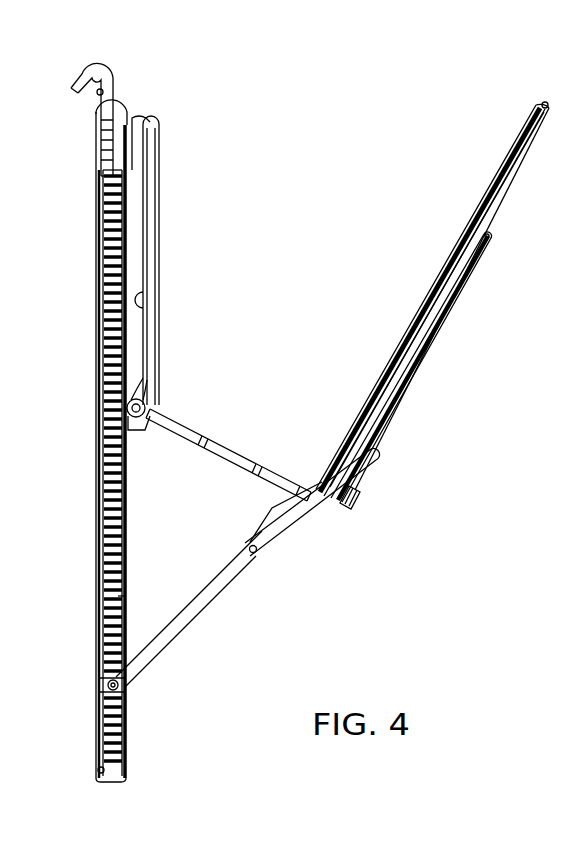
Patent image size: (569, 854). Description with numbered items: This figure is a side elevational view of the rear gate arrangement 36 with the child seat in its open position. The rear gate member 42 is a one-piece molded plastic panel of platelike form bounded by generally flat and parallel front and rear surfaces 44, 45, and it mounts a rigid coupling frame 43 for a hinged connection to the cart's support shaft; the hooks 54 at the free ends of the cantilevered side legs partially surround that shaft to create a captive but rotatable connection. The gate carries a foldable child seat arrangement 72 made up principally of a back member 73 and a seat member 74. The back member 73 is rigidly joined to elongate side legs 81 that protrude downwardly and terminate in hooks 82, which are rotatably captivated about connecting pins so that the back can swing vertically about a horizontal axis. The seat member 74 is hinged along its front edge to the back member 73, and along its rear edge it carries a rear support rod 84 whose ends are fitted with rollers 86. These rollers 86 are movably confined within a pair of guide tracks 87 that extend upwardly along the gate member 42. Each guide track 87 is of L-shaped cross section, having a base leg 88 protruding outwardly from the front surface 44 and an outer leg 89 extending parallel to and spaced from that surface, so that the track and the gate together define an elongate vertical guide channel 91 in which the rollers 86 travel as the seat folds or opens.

The rear gate arrangement 36 is at (234, 142).
The rear gate member 42 is at (128, 533).
The rigid coupling frame 43 is at (92, 345).
The front surface 44 is at (130, 596).
The rear surface 45 is at (96, 638).
The hooks 54 is at (78, 85).
The foldable child seat arrangement 72 is at (418, 376).
The back member 73 is at (486, 196).
The seat member 74 is at (243, 440).
The side legs 81 is at (152, 665).
The hooks 82 is at (126, 693).
The rear support rod 84 is at (146, 410).
The rollers 86 is at (152, 382).
The guide tracks 87 is at (161, 230).
The base leg 88 is at (133, 150).
The outer leg 89 is at (152, 184).
The guide channel 91 is at (145, 300).